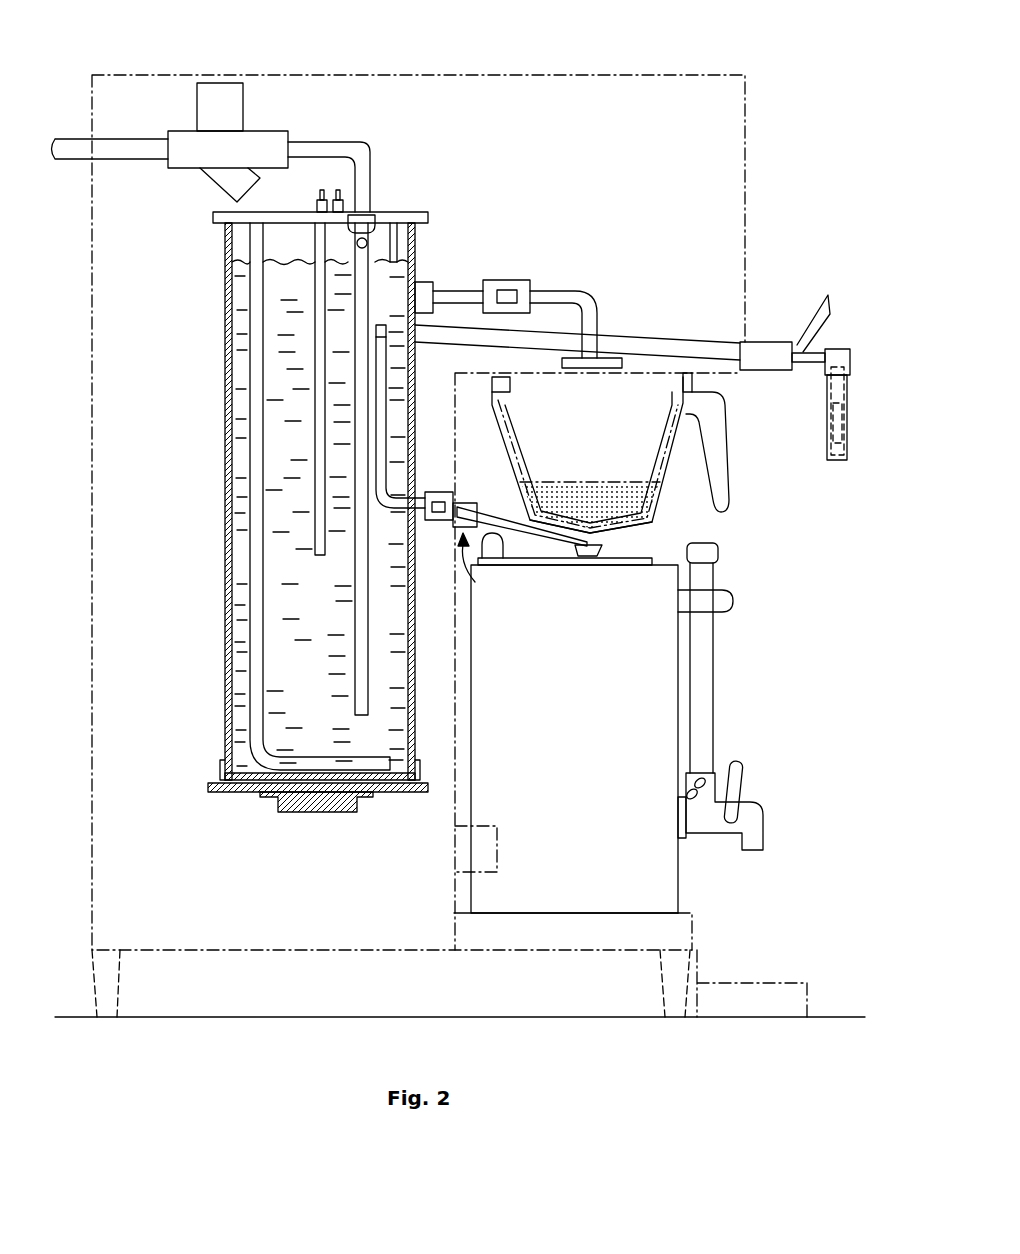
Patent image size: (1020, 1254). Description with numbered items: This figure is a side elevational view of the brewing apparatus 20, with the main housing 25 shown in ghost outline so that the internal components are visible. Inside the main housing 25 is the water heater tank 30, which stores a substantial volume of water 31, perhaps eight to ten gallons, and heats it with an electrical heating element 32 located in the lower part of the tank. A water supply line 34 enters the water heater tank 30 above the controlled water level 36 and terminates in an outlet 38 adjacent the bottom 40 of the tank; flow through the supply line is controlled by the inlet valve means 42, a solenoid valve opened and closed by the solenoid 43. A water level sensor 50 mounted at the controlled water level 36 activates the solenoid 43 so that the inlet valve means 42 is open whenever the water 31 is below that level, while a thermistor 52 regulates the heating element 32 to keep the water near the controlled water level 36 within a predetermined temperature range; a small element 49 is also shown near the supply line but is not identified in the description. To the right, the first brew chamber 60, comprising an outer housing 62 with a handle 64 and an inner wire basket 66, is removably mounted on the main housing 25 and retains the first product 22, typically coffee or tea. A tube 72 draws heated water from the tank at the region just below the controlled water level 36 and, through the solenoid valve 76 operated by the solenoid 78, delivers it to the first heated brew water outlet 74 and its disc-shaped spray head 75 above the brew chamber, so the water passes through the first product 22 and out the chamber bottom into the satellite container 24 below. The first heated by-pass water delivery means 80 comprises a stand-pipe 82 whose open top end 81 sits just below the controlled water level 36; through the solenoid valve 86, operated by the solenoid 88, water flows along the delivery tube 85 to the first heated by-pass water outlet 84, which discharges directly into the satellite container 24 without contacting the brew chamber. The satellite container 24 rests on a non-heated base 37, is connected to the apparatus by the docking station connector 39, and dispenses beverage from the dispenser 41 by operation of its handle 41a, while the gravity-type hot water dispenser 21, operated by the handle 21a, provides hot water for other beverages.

The brewing apparatus 20 is at (797, 55).
The gravity-type hot water dispenser 21 is at (848, 400).
The handle 21a is at (828, 310).
The first product 22 is at (598, 486).
The satellite container 24 is at (670, 693).
The main housing 25 is at (271, 78).
The water heater tank 30 is at (226, 550).
The water 31 is at (320, 498).
The electrical heating element 32 is at (262, 690).
The water supply line 34 is at (372, 152).
The controlled water level 36 is at (346, 262).
The base 37 is at (690, 930).
The outlet 38 is at (358, 722).
The docking station connector 39 is at (490, 826).
The bottom 40 is at (360, 796).
The dispenser 41 is at (765, 826).
The handle 41a is at (745, 783).
The inlet valve means 42 is at (195, 165).
The solenoid 43 is at (197, 106).
The check ball 49 is at (358, 248).
The water level sensor 50 is at (387, 256).
The thermistor 52 is at (320, 550).
The first brew chamber 60 is at (606, 419).
The outer housing 62 is at (660, 515).
The handle 64 is at (726, 432).
The inner wire basket 66 is at (510, 440).
The tube 72 is at (447, 290).
The first heated brew water outlet 74 is at (600, 345).
The disc-shaped spray head 75 is at (622, 360).
The solenoid valve 76 is at (527, 280).
The solenoid 78 is at (507, 290).
The first heated by-pass water delivery means 80 is at (597, 661).
The open top end 81 is at (380, 325).
The stand-pipe 82 is at (386, 415).
The first heated by-pass water outlet 84 is at (572, 552).
The delivery tube 85 is at (487, 503).
The solenoid valve 86 is at (437, 492).
The solenoid 88 is at (440, 520).